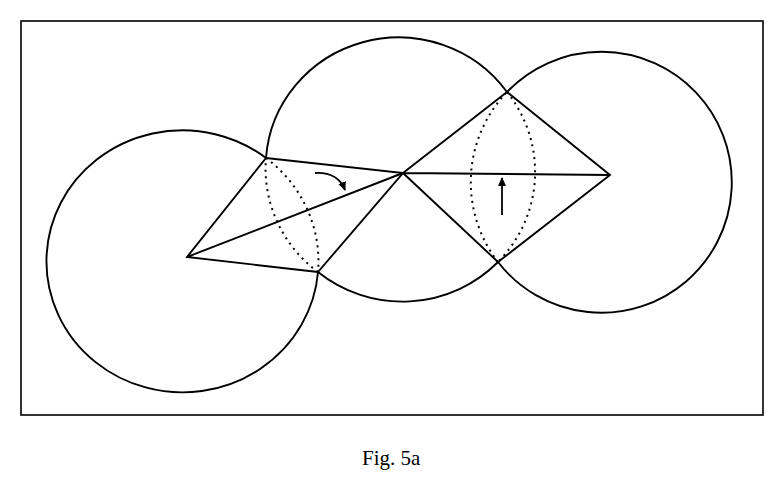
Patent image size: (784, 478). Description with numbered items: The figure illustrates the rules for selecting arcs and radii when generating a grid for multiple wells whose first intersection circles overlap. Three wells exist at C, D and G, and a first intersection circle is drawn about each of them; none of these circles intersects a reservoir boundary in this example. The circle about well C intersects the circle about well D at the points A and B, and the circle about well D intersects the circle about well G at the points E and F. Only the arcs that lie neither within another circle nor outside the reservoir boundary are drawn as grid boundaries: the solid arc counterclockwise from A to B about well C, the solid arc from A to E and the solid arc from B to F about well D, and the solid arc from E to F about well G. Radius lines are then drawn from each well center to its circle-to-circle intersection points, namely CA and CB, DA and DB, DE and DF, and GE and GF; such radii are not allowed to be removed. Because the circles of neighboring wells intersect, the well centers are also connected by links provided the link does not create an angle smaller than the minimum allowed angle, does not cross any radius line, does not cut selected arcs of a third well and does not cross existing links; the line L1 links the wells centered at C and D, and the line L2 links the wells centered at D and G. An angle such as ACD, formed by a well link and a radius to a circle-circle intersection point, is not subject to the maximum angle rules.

The circle-to-circle intersection point A is at (283, 201).
The circle-to-circle intersection point B is at (188, 261).
The well center C is at (284, 215).
The well center D is at (438, 182).
The circle-to-circle intersection point E is at (503, 164).
The circle-to-circle intersection point F is at (610, 182).
The well center G is at (563, 177).
The well link line L1 is at (319, 181).
The well link line L2 is at (501, 209).